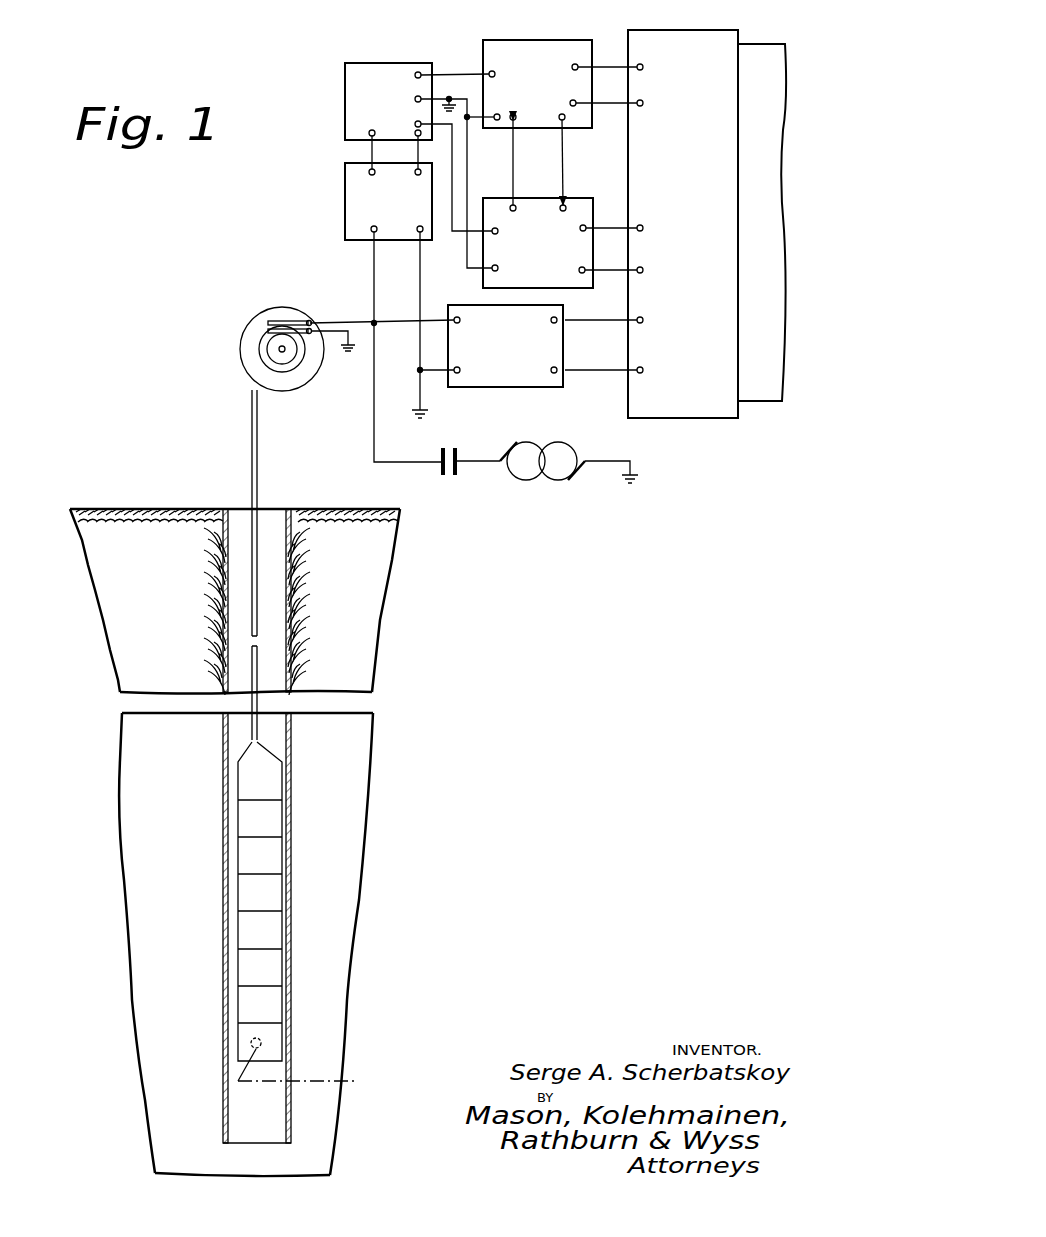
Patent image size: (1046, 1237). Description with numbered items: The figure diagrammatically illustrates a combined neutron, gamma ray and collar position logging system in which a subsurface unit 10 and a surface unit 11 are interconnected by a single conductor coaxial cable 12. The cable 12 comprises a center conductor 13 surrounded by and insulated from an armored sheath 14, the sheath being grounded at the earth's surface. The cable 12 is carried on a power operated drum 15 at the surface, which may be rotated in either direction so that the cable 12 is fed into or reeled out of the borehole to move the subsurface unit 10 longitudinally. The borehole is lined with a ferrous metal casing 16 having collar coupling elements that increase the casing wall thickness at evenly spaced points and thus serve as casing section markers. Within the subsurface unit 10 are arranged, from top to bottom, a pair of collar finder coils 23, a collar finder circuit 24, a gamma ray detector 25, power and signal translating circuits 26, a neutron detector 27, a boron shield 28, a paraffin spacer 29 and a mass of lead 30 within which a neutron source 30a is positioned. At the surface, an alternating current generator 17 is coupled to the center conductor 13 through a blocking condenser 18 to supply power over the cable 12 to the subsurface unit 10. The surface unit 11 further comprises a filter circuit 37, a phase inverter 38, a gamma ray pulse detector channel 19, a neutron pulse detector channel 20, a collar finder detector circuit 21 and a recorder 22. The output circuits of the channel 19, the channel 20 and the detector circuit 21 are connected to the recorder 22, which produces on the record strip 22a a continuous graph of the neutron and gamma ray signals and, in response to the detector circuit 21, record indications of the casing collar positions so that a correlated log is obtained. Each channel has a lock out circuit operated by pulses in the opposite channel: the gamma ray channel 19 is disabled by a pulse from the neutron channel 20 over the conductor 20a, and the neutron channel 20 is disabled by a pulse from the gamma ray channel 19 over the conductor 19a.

The subsurface unit 10 is at (270, 752).
The surface unit 11 is at (548, 185).
The single conductor coaxial cable 12 is at (252, 431).
The center conductor 13 is at (322, 322).
The armored sheath 14 is at (333, 340).
The power operated drum 15 is at (240, 365).
The ferrous metal casing 16 is at (298, 600).
The alternating current generator 17 is at (530, 480).
The blocking condenser 18 is at (452, 446).
The gamma ray pulse detector channel 19 is at (572, 198).
The conductor 19a is at (513, 150).
The neutron pulse detector channel 20 is at (540, 40).
The conductor 20a is at (562, 160).
The collar finder detector circuit 21 is at (520, 388).
The recorder 22 is at (702, 418).
The record strip 22a is at (768, 401).
The collar finder coils 23 is at (245, 781).
The collar finder circuit 24 is at (245, 819).
The gamma ray detector 25 is at (245, 856).
The power and signal translating circuits 26 is at (245, 893).
The neutron detector 27 is at (245, 930).
The boron shield 28 is at (245, 968).
The paraffin spacer 29 is at (245, 1006).
The mass of lead 30 is at (245, 1030).
The neutron source 30a is at (252, 1050).
The filter circuit 37 is at (345, 214).
The phase inverter 38 is at (345, 97).